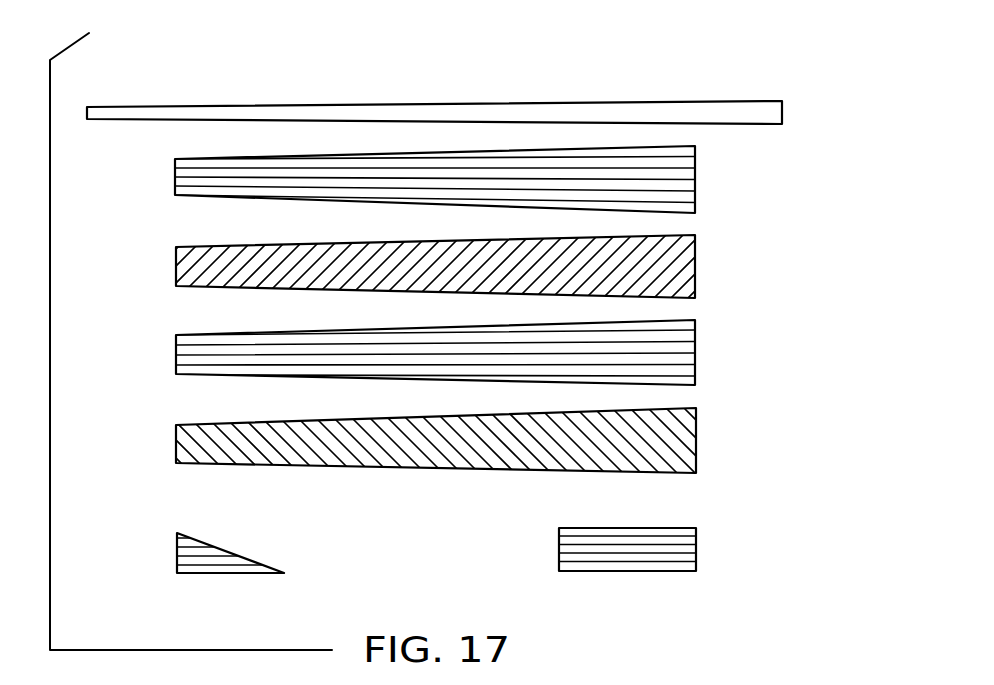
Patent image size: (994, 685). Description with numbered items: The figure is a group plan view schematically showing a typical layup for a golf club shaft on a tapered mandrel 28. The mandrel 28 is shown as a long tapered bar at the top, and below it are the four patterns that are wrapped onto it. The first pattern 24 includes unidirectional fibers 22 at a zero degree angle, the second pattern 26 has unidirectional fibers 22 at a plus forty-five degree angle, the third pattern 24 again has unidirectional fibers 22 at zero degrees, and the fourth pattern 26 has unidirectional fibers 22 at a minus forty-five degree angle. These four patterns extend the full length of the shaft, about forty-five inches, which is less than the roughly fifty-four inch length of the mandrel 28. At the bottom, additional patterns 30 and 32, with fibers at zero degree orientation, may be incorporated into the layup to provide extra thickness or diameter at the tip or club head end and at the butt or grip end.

The unidirectional fibers 22 is at (481, 269).
The first pattern 24 is at (688, 170).
The second pattern 26 is at (683, 262).
The mandrel 28 is at (617, 106).
The additional pattern 30 is at (221, 575).
The additional pattern 32 is at (627, 572).